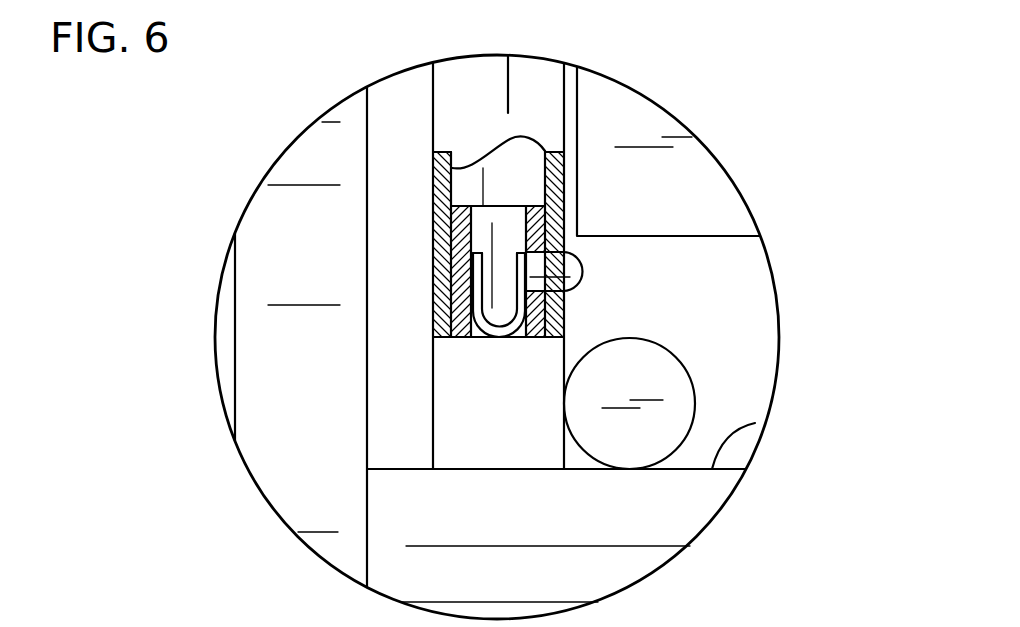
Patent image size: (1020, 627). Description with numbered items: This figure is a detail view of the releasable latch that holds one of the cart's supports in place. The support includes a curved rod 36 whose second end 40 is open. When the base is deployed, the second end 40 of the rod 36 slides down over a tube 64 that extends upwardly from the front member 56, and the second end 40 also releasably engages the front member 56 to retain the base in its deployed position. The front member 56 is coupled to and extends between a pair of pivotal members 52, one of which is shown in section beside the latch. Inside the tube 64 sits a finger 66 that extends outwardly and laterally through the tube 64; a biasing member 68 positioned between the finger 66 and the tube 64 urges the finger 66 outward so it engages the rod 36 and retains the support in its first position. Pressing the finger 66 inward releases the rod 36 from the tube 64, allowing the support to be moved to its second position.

The rod 36 is at (431, 97).
The second end 40 is at (442, 338).
The pivotal member 52 is at (673, 352).
The front member 56 is at (755, 423).
The tube 64 is at (441, 248).
The finger 66 is at (580, 263).
The biasing member 68 is at (510, 268).